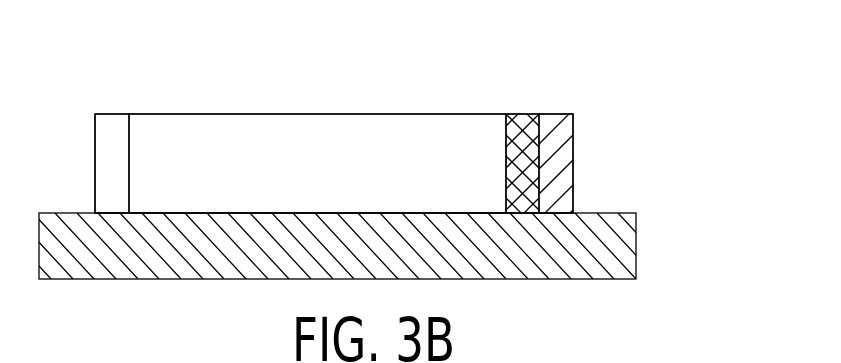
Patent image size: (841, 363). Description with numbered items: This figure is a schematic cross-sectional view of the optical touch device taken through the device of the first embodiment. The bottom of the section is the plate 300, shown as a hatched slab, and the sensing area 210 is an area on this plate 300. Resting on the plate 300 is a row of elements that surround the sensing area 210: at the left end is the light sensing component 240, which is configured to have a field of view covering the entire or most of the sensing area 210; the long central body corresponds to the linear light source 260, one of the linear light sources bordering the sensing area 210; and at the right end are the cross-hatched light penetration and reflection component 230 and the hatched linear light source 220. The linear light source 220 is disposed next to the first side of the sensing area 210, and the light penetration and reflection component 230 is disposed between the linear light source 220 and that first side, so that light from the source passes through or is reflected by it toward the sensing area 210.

The sensing area 210 is at (293, 213).
The linear light source 220 is at (562, 147).
The light penetration and reflection component 230 is at (525, 127).
The light sensing component 240 is at (111, 126).
The linear light source 260 is at (400, 128).
The plate 300 is at (626, 243).